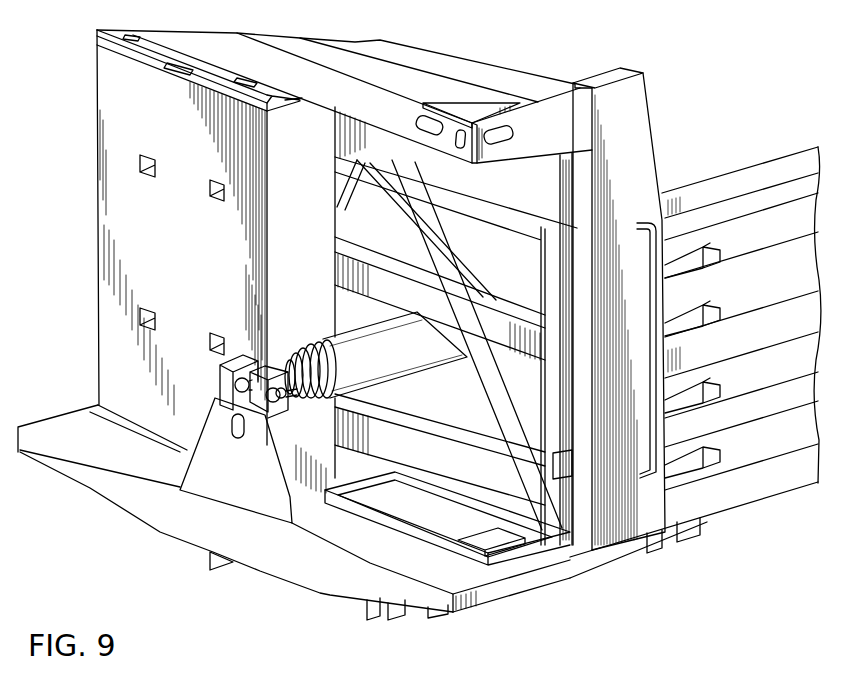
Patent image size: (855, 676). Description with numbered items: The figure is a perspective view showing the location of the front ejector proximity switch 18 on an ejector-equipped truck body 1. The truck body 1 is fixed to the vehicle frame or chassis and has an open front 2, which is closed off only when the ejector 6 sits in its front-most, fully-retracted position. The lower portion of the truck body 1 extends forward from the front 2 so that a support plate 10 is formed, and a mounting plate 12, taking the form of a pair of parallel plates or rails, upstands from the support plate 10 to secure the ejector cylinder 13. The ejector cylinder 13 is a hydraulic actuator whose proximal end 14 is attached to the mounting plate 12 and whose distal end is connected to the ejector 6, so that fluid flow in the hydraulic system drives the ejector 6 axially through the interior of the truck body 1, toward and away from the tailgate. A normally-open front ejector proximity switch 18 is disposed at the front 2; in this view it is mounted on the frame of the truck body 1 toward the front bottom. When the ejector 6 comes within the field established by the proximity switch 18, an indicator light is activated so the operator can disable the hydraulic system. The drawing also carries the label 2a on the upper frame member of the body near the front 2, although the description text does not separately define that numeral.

The truck body 1 is at (748, 180).
The front 2 is at (583, 505).
The top frame beam 2a is at (475, 117).
The ejector 6 is at (492, 260).
The support plate 10 is at (458, 573).
The mounting plate 12 is at (307, 478).
The ejector cylinder 13 is at (368, 338).
The proximal end 14 is at (288, 352).
The front ejector proximity switch 18 is at (568, 472).